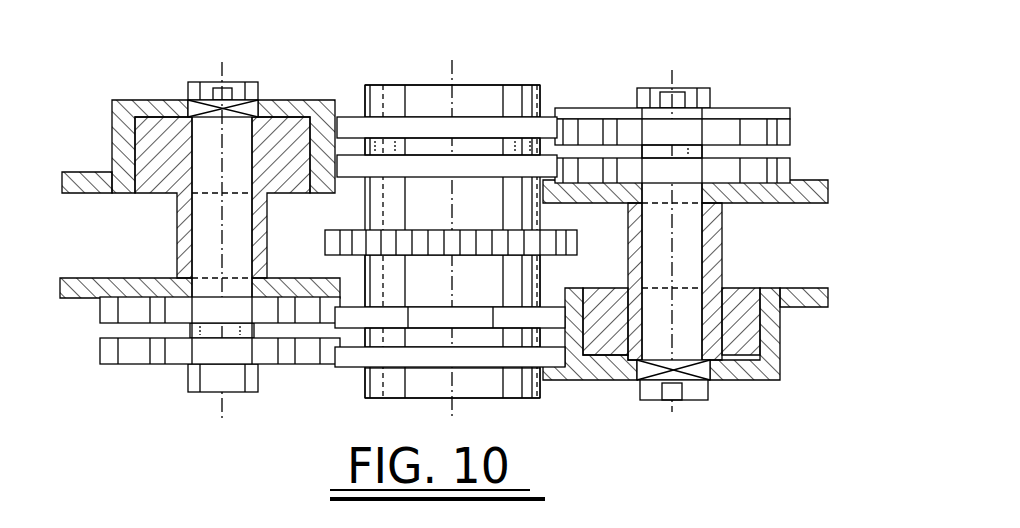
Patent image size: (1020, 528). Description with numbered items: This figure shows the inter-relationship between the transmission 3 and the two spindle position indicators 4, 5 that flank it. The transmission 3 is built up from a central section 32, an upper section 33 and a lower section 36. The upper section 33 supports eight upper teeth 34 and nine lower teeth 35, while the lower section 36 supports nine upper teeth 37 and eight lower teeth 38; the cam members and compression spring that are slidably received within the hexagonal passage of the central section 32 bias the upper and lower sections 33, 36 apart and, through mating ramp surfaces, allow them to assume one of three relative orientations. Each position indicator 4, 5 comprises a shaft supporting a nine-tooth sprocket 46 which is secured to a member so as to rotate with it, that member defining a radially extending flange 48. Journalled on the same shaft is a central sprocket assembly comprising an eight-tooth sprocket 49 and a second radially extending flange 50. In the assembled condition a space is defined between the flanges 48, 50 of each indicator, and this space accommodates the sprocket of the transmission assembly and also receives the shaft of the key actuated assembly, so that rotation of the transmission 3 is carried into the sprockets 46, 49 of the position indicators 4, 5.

The transmission 3 is at (436, 80).
The position indicator 4 is at (733, 101).
The position indicator 5 is at (166, 98).
The central section 32 is at (497, 287).
The upper section 33 is at (470, 118).
The upper teeth 34 is at (393, 125).
The lower teeth 35 is at (366, 128).
The lower section 36 is at (428, 373).
The upper teeth 37 is at (527, 322).
The lower teeth 38 is at (540, 360).
The nine-tooth sprocket 46 is at (152, 352).
The radially extending flange 48 is at (82, 172).
The eight-tooth sprocket 49 is at (132, 308).
The radially extending flange 50 is at (75, 297).